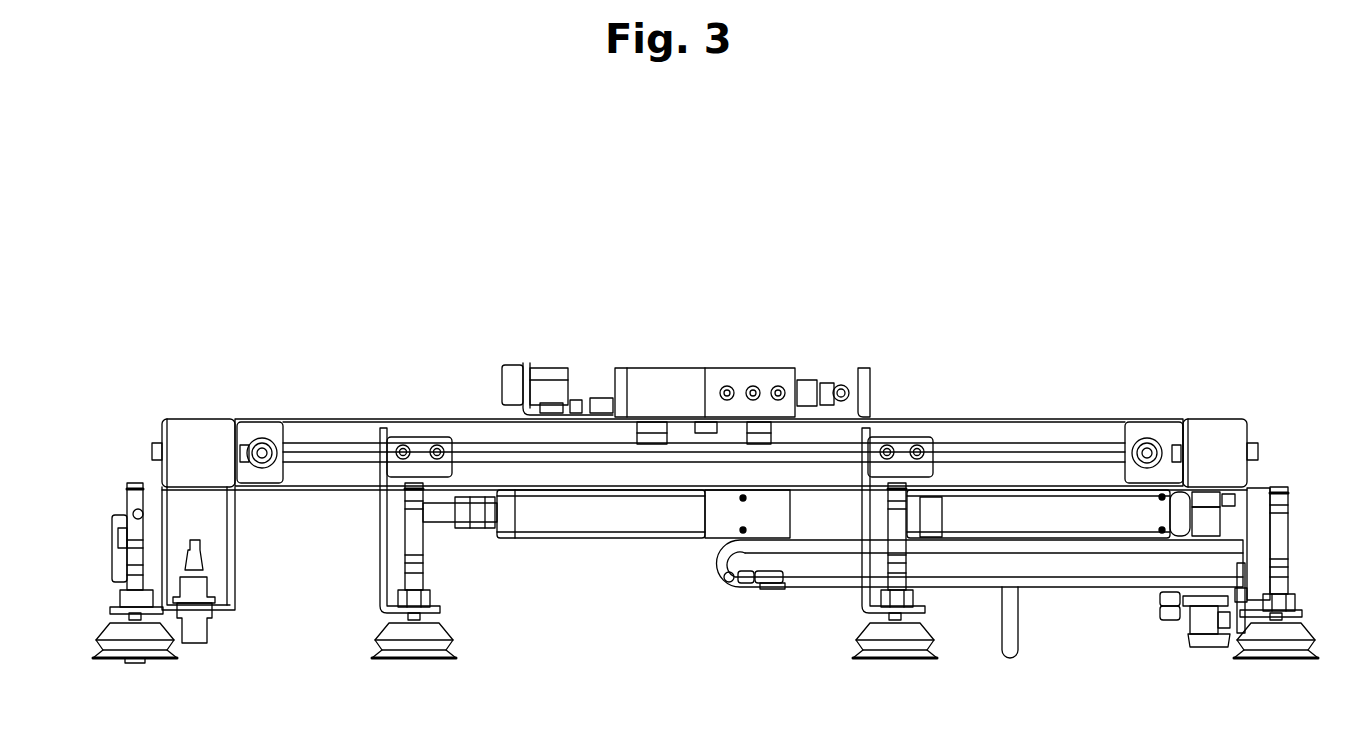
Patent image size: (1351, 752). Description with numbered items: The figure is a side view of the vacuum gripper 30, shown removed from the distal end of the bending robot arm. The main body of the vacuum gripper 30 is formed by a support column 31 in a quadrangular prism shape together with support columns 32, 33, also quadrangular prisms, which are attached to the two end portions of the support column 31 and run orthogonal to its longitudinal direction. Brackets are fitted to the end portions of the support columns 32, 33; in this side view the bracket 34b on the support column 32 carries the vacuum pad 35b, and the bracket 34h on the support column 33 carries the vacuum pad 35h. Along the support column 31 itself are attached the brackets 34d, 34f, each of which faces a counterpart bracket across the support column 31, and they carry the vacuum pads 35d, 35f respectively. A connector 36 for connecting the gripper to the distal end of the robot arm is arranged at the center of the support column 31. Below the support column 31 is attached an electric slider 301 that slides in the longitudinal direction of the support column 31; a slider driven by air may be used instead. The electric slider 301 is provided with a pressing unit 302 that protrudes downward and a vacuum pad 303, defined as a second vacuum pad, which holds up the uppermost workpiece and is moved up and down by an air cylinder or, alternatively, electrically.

The vacuum gripper 30 is at (945, 236).
The support column 31 is at (1020, 417).
The support column 32 is at (200, 417).
The support column 33 is at (1213, 417).
The bracket 34b is at (167, 537).
The bracket 34d is at (378, 551).
The bracket 34f is at (862, 596).
The bracket 34h is at (1250, 511).
The vacuum pad 35b is at (110, 625).
The vacuum pad 35d is at (442, 630).
The vacuum pad 35f is at (858, 625).
The vacuum pad 35h is at (1300, 620).
The connector 36 is at (670, 365).
The electric slider 301 is at (968, 576).
The pressing unit 302 is at (1008, 662).
The vacuum pad 303 is at (1163, 634).